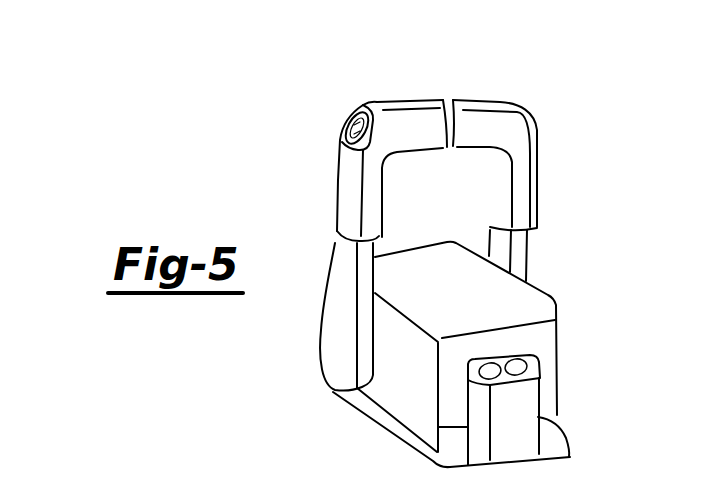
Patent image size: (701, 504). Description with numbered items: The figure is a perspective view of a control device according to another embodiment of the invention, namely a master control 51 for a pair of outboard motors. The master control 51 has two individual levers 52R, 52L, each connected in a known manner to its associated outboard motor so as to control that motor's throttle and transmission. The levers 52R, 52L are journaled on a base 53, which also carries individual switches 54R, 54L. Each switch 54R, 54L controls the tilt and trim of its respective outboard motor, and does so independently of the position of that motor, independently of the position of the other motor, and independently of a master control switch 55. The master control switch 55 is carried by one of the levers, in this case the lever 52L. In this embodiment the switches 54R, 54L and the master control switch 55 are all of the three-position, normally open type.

The master control 51 is at (533, 110).
The lever 52L is at (398, 118).
The lever 52R is at (528, 162).
The base 53 is at (502, 293).
The switch 54L is at (483, 373).
The switch 54R is at (535, 360).
The master control switch 55 is at (355, 120).